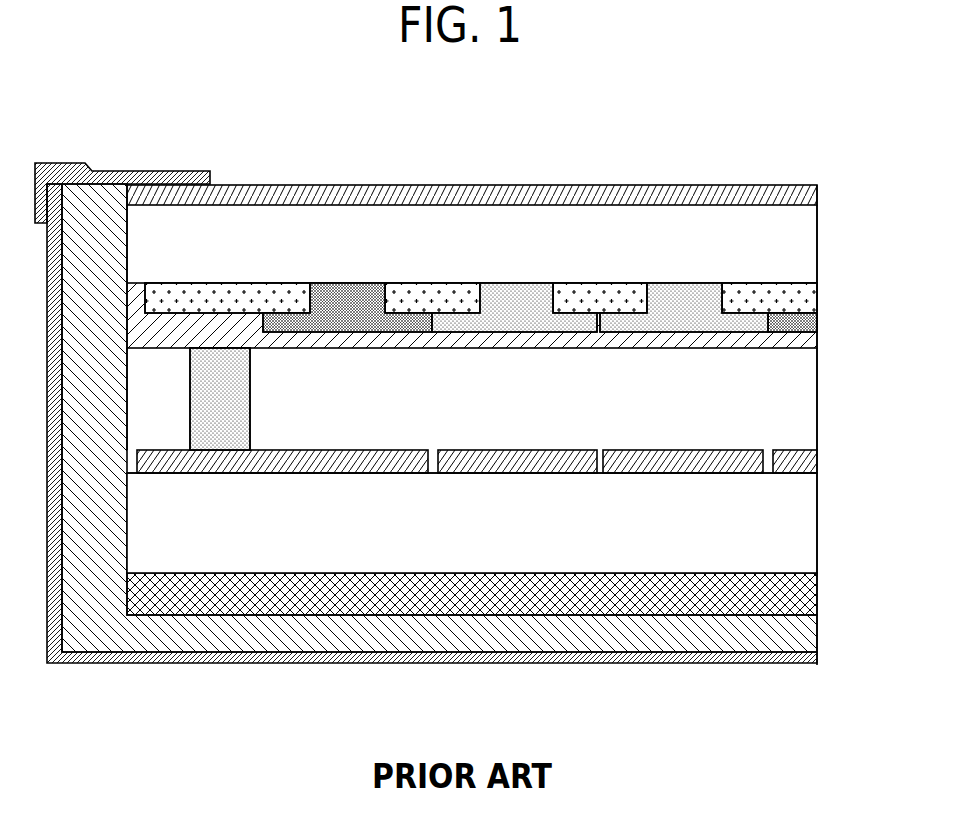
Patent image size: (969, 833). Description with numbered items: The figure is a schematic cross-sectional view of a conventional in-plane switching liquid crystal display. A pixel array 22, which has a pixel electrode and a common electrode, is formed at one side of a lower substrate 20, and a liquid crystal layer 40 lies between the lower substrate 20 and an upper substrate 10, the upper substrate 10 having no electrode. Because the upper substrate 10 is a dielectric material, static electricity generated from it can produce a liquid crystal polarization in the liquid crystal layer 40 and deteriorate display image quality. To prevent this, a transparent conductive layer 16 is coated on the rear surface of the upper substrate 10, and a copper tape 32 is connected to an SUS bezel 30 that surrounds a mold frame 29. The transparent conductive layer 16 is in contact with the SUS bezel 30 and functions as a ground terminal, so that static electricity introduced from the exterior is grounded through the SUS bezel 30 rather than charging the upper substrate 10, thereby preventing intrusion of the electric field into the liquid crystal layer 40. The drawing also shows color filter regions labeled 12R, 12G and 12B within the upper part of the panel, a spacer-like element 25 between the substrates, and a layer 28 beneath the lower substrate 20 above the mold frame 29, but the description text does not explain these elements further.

The copper tape 32 is at (105, 171).
The red color filter 12R is at (347, 293).
The green color filter 12G is at (517, 293).
The blue color filter 12B is at (685, 293).
The transparent conductive layer 16 is at (817, 192).
The upper substrate 10 is at (803, 247).
The column spacer 25 is at (250, 400).
The liquid crystal layer 40 is at (472, 410).
The pixel array 22 is at (810, 457).
The lower substrate 20 is at (805, 527).
The backlight / optical sheet 28 is at (805, 595).
The mold frame 29 is at (805, 633).
The SUS bezel 30 is at (805, 658).